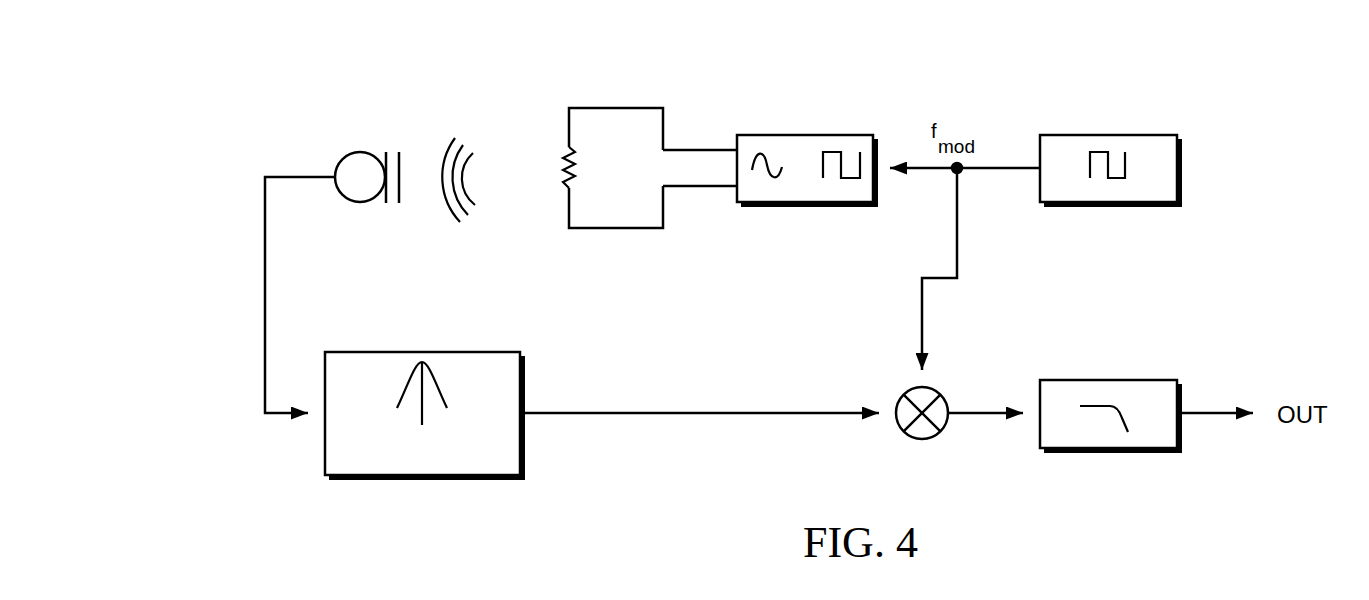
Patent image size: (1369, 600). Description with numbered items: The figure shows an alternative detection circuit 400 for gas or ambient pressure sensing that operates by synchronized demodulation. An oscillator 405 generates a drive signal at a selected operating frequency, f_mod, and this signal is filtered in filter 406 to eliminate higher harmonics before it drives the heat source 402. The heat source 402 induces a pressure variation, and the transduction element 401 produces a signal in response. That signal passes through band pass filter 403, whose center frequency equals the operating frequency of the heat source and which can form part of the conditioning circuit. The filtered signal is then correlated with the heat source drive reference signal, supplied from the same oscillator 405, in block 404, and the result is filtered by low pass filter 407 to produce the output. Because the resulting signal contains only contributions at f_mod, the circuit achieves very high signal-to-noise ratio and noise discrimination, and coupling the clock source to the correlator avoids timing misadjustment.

The detection circuit 400 is at (232, 93).
The transduction element 401 is at (360, 152).
The heat source 402 is at (563, 152).
The band pass filter 403 is at (422, 352).
The correlator block 404 is at (922, 439).
The oscillator 405 is at (1108, 133).
The filter 406 is at (805, 133).
The low pass filter 407 is at (1108, 380).